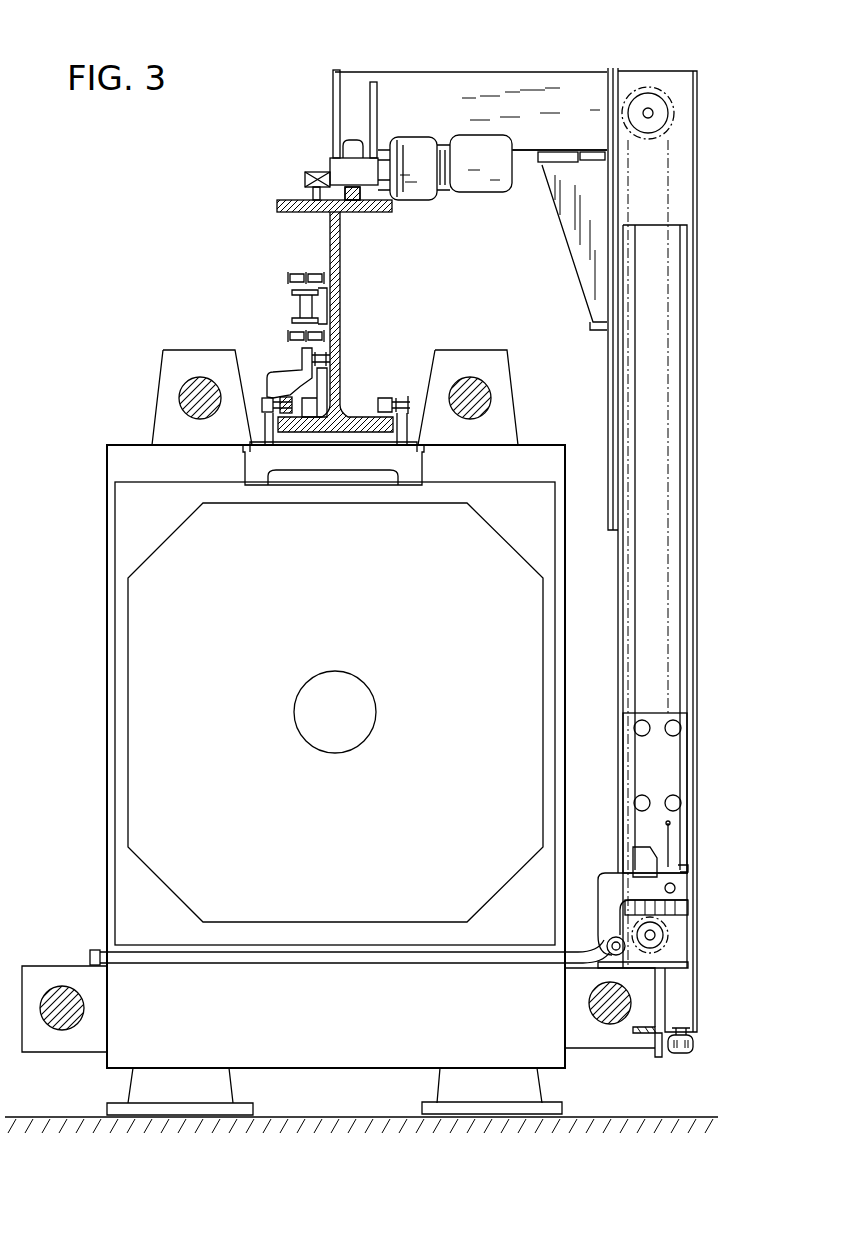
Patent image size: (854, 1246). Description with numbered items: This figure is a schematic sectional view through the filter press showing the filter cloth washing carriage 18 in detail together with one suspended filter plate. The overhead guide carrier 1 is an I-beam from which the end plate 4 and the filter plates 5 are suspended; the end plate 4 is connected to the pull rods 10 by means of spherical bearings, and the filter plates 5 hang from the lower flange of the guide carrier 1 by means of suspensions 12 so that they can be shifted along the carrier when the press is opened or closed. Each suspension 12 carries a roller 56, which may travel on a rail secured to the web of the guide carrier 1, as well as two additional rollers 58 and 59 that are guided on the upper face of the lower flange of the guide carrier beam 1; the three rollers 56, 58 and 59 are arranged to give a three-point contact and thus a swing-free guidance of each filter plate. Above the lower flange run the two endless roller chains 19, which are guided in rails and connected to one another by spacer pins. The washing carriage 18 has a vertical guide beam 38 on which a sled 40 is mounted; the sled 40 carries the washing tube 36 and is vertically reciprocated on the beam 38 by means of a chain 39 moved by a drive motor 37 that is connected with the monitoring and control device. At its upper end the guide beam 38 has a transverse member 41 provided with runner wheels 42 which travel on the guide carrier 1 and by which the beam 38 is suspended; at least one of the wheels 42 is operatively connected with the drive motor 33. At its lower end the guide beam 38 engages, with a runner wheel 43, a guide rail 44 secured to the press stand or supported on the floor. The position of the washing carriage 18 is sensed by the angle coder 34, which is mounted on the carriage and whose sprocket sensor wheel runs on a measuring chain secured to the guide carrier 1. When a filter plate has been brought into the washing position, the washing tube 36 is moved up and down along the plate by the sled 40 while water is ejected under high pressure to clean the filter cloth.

The guide carrier 1 is at (338, 243).
The end plate 4 is at (112, 458).
The filter plates 5 is at (122, 517).
The pull rods 10 is at (65, 1023).
The suspension 12 is at (278, 375).
The filter cloth washing carriage 18 is at (514, 70).
The roller chains 19 is at (290, 277).
The drive motor 33 is at (483, 180).
The angle coder 34 is at (305, 178).
The washing tube 36 is at (387, 960).
The drive motor 37 is at (672, 103).
The vertical guide beam 38 is at (678, 195).
The chain 39 is at (668, 143).
The sled 40 is at (676, 762).
The transverse member 41 is at (458, 88).
The runner wheels 42 is at (352, 140).
The runner wheel 43 is at (692, 1050).
The guide rail 44 is at (655, 1055).
The roller 56 is at (318, 358).
The roller 58 is at (262, 403).
The roller 59 is at (385, 395).